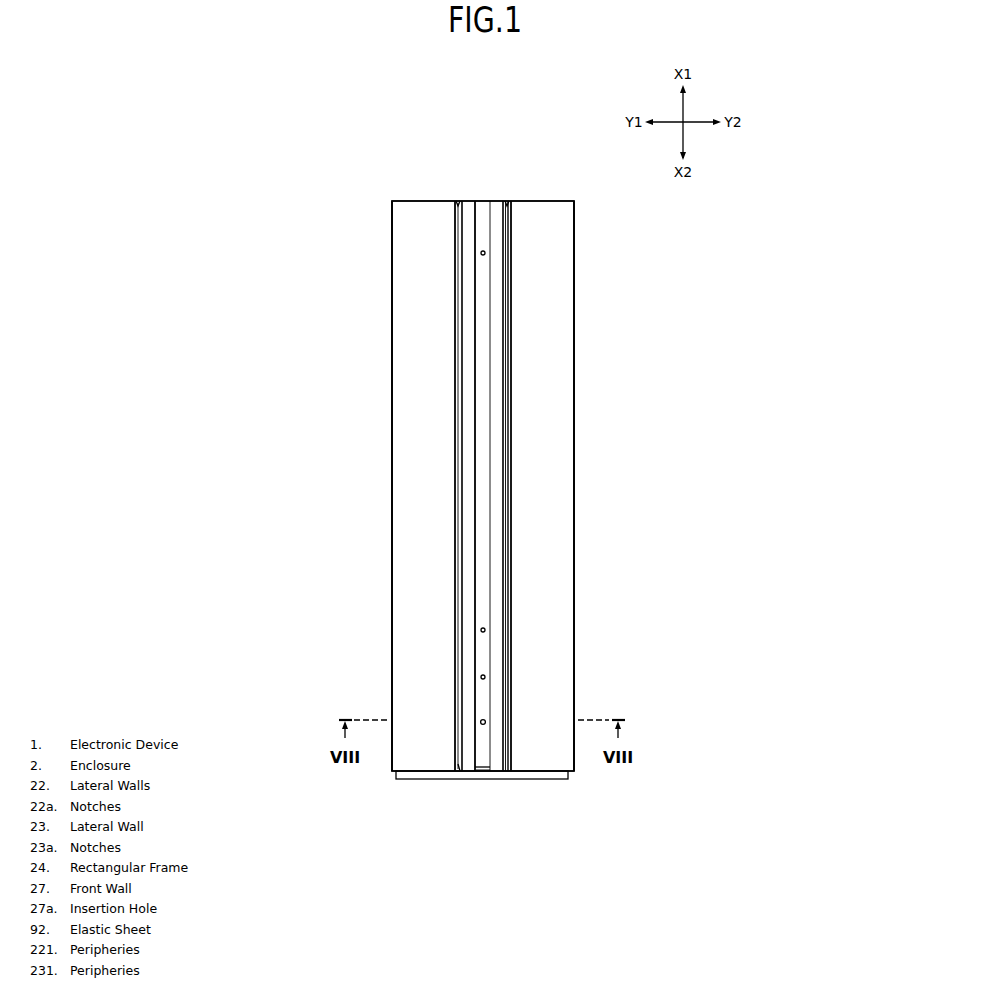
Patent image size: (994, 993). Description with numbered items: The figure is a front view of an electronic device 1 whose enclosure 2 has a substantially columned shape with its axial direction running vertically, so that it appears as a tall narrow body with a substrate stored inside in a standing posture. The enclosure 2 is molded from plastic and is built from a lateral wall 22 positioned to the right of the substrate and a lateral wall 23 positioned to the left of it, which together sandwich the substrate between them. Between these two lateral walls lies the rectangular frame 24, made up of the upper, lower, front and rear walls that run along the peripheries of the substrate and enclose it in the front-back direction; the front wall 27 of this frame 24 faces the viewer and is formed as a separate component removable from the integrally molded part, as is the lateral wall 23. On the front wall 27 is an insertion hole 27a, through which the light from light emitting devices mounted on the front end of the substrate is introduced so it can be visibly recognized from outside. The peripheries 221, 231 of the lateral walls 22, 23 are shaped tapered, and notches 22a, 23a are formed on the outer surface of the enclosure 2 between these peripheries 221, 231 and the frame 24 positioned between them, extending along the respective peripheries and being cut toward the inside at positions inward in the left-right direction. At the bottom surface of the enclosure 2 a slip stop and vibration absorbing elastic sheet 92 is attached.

The electronic device 1 is at (301, 171).
The enclosure 2 is at (406, 200).
The lateral wall 22 is at (402, 497).
The notch 22a is at (457, 213).
The lateral wall 23 is at (568, 440).
The notch 23a is at (510, 213).
The rectangular frame 24 is at (483, 216).
The front wall 27 is at (483, 766).
The insertion hole 27a is at (486, 722).
The elastic sheet 92 is at (538, 779).
The periphery 221 is at (456, 318).
The periphery 231 is at (511, 282).